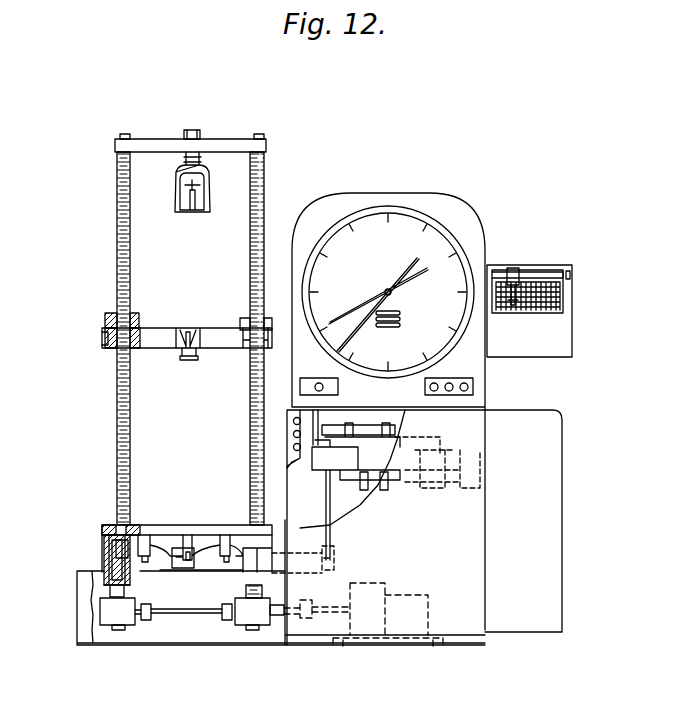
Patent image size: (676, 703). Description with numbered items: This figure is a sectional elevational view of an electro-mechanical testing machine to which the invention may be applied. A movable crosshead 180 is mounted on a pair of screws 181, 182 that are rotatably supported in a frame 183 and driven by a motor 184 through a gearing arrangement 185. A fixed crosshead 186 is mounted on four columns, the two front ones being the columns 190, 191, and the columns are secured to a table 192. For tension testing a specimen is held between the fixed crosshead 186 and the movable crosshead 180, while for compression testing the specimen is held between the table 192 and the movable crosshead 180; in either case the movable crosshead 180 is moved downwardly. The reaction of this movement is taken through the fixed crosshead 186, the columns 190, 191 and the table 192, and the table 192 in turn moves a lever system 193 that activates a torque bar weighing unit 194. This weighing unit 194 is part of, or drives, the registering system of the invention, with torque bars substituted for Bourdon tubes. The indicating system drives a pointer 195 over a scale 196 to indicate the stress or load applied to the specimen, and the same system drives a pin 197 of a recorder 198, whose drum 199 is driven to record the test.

The movable crosshead 180 is at (150, 350).
The screw 181 is at (117, 288).
The screw 182 is at (250, 288).
The frame 183 is at (77, 607).
The motor 184 is at (418, 595).
The gearing arrangement 185 is at (180, 618).
The fixed crosshead 186 is at (144, 139).
The column 190 is at (117, 165).
The column 191 is at (264, 176).
The table 192 is at (160, 525).
The lever system 193 is at (208, 562).
The torque bar weighing unit 194 is at (345, 484).
The pointer 195 is at (350, 338).
The scale 196 is at (318, 282).
The pin 197 is at (530, 272).
The recorder 198 is at (572, 308).
The drum 199 is at (560, 289).